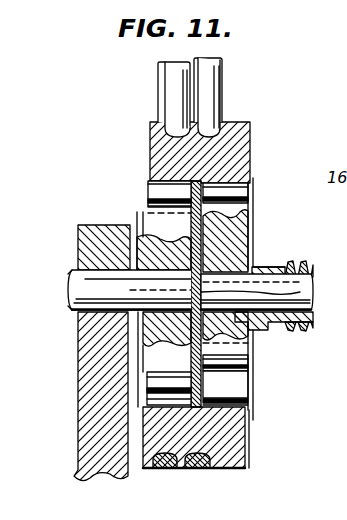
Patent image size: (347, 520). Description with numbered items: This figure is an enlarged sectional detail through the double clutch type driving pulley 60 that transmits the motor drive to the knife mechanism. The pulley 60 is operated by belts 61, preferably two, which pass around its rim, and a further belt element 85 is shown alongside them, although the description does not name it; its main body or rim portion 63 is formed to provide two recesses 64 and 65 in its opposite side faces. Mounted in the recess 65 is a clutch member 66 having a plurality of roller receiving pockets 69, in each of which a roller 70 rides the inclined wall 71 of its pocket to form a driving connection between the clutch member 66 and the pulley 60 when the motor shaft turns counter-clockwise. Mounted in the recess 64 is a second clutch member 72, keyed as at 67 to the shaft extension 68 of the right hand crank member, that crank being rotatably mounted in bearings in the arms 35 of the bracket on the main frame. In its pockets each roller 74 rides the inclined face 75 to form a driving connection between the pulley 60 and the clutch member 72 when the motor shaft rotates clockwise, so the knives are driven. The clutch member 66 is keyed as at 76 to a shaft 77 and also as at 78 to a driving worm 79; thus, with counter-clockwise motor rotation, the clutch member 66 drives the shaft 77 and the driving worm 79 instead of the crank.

The arms 35 is at (80, 412).
The driving pulley 60 is at (247, 461).
The belts 61 is at (160, 71).
The main body or rim portion 63 is at (233, 133).
The recess 64 is at (166, 179).
The recess 65 is at (228, 408).
The clutch member 66 is at (223, 230).
The key 67 is at (143, 292).
The shaft extension 68 is at (78, 301).
The roller receiving pockets 69 is at (240, 340).
The roller 70 is at (237, 192).
The inclined wall 71 is at (233, 383).
The clutch member 72 is at (138, 232).
The roller 74 is at (163, 198).
The inclined face 75 is at (160, 190).
The key 76 is at (228, 275).
The shaft 77 is at (297, 294).
The key 78 is at (300, 268).
The driving worm 79 is at (305, 327).
The rod 85 is at (203, 72).